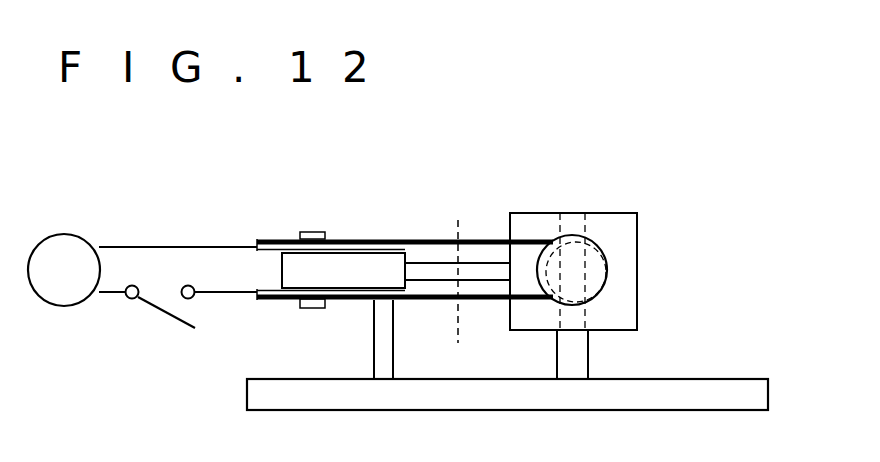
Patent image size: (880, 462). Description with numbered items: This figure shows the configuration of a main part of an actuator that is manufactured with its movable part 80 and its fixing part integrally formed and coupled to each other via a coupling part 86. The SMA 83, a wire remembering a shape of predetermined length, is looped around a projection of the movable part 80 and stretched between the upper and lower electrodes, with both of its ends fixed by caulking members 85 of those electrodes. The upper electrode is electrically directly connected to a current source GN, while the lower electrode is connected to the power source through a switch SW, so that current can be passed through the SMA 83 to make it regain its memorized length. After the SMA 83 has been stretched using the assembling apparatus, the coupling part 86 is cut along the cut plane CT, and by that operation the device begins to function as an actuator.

The movable part 80 is at (612, 213).
The SMA 83 is at (372, 239).
The caulking members 85 is at (312, 232).
The coupling part 86 is at (430, 281).
The cut plane CT is at (458, 222).
The current source GN is at (64, 306).
The switch SW is at (154, 322).